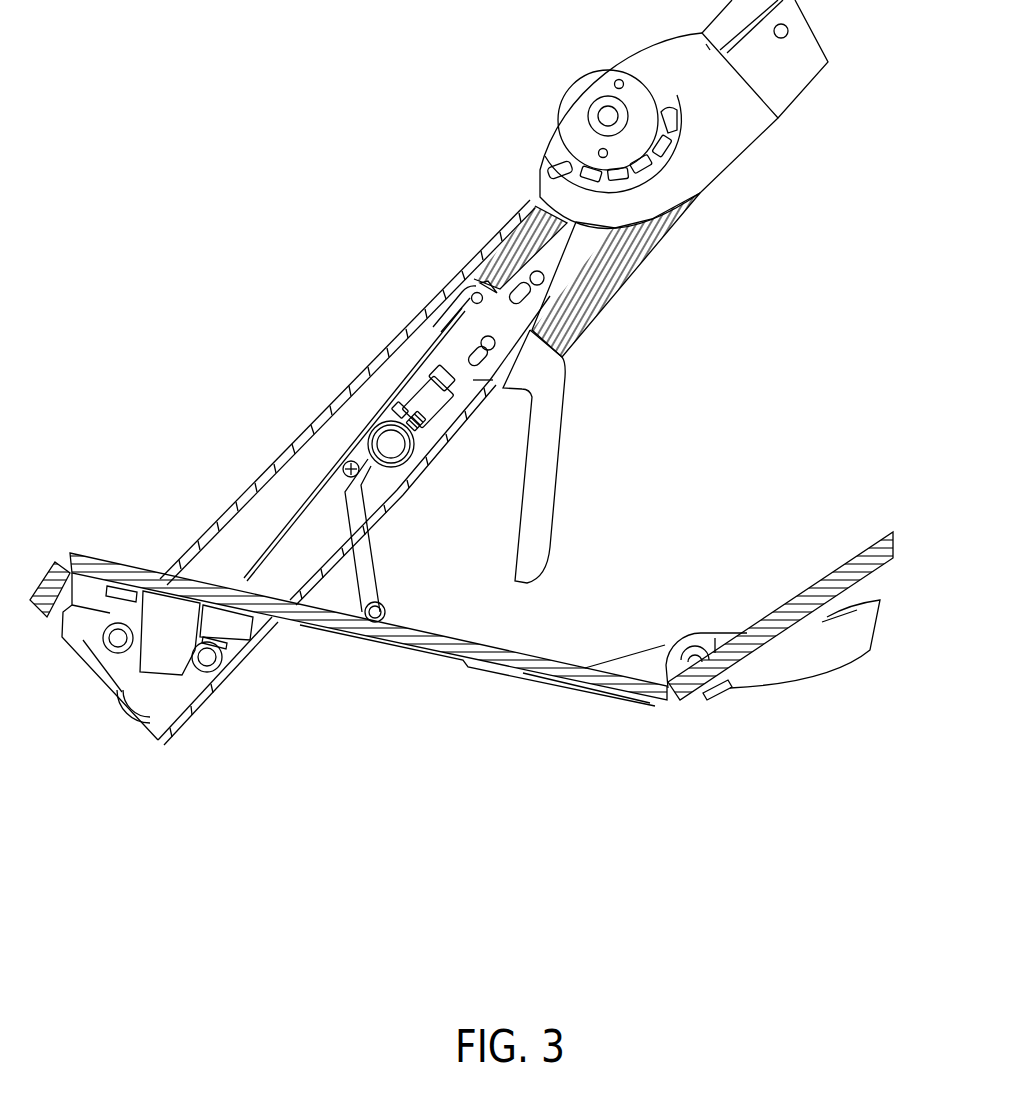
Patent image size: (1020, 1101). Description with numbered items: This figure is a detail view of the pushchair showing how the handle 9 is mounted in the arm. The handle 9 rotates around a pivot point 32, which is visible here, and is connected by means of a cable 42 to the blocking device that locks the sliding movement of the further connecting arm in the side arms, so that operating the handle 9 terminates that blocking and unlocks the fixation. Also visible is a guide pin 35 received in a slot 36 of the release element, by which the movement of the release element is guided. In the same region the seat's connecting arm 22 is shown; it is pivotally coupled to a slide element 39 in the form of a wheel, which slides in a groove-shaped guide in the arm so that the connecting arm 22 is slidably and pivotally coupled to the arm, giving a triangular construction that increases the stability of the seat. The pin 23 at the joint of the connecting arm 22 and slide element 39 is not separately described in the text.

The handle 9 is at (540, 454).
The connecting arm 22 is at (360, 553).
The pivot pin 23 is at (391, 447).
The pivot point 32 is at (496, 343).
The guide pin 35 is at (545, 282).
The slot 36 is at (516, 290).
The slide element 39 is at (373, 428).
The cable 42 is at (293, 510).